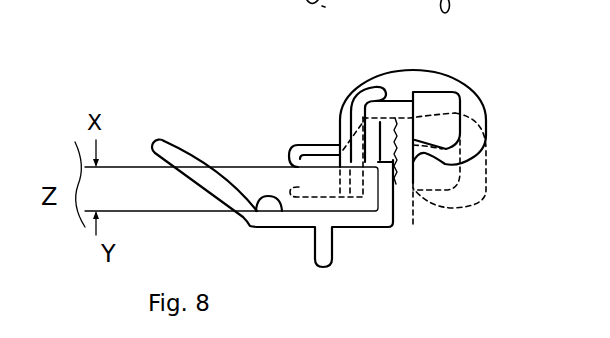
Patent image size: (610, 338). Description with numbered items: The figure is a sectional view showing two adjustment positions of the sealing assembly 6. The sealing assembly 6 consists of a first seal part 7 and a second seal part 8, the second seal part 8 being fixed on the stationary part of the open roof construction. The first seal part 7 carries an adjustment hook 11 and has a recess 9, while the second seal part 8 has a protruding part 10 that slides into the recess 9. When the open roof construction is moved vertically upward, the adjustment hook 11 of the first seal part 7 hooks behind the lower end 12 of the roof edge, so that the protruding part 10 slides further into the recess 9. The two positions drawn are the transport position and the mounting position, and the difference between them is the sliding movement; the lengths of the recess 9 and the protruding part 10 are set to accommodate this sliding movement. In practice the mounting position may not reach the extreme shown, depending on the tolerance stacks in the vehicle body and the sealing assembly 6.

The sealing assembly 6 is at (214, 194).
The first seal part 7 is at (441, 72).
The second seal part 8 is at (283, 218).
The recess 9 is at (390, 124).
The protruding part 10 is at (413, 200).
The adjustment hook 11 is at (320, 148).
The lower end 12 is at (255, 211).